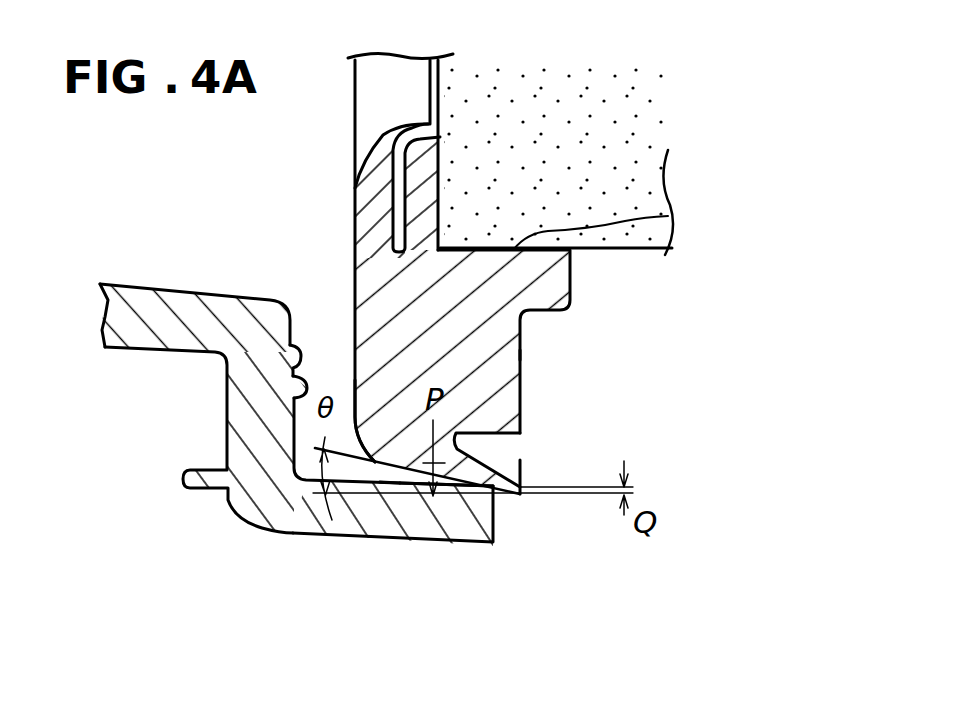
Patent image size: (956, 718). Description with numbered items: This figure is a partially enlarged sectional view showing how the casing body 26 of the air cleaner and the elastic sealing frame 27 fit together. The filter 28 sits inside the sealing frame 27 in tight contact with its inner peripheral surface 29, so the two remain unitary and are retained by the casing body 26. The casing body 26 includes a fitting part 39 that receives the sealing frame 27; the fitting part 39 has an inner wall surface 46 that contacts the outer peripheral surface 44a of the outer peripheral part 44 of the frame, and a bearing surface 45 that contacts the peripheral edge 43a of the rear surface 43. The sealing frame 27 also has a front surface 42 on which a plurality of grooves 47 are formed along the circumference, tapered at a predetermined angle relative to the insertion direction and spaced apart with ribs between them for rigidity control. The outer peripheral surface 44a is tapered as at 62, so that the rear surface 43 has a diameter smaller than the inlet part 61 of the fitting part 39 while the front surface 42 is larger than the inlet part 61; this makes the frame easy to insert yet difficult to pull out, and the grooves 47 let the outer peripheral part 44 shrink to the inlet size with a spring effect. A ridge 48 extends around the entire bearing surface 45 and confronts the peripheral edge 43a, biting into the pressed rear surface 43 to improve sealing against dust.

The casing body 26 is at (187, 298).
The sealing frame 27 is at (602, 285).
The filter 28 is at (628, 167).
The inner peripheral surface 29 is at (668, 218).
The fitting part 39 is at (560, 480).
The front surface 42 is at (522, 370).
The rear surface 43 is at (353, 253).
The peripheral edge 43a is at (348, 372).
The outer peripheral part 44 is at (495, 500).
The outer peripheral surface 44a is at (392, 474).
The bearing surface 45 is at (290, 364).
The inner wall surface 46 is at (448, 490).
The grooves 47 is at (522, 445).
The ridge 48 is at (294, 390).
The inlet part 61 is at (522, 470).
The taper 62 is at (390, 486).